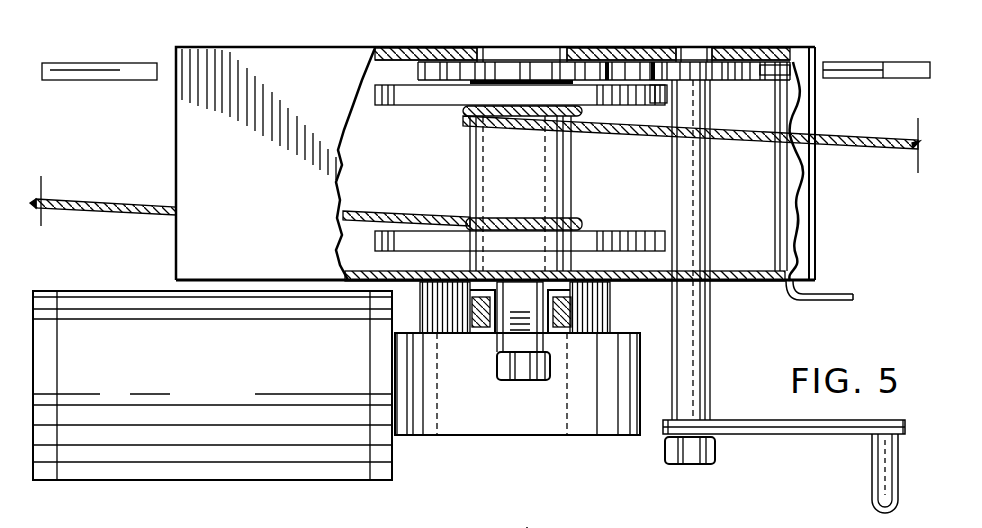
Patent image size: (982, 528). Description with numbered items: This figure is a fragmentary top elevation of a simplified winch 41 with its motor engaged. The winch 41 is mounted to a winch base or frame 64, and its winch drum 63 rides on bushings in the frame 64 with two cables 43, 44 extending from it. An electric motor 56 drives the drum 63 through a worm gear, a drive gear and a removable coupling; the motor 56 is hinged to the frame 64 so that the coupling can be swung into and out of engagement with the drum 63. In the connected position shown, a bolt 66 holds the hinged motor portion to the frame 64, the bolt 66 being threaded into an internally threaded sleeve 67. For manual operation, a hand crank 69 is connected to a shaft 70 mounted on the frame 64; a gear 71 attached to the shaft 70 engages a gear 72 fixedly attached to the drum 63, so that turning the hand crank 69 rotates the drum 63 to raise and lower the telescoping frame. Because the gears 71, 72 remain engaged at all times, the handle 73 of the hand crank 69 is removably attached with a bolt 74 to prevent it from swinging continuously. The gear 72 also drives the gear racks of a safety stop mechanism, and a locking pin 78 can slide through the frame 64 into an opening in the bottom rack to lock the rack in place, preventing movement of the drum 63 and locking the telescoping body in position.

The winch 41 is at (427, 33).
The cable 43 is at (114, 200).
The cable 44 is at (877, 143).
The electric motor 56 is at (212, 349).
The winch drum 63 is at (493, 163).
The frame 64 is at (297, 69).
The bolt 66 is at (498, 360).
The internally threaded sleeve 67 is at (527, 527).
The manual hand crank 69 is at (803, 425).
The shaft 70 is at (693, 358).
The gear 71 is at (697, 72).
The gear 72 is at (537, 72).
The handle 73 is at (878, 468).
The bolt 74 is at (666, 452).
The locking pin 78 is at (793, 303).